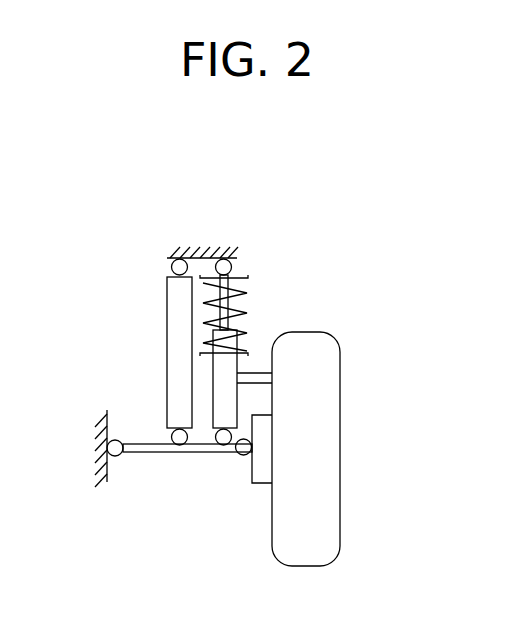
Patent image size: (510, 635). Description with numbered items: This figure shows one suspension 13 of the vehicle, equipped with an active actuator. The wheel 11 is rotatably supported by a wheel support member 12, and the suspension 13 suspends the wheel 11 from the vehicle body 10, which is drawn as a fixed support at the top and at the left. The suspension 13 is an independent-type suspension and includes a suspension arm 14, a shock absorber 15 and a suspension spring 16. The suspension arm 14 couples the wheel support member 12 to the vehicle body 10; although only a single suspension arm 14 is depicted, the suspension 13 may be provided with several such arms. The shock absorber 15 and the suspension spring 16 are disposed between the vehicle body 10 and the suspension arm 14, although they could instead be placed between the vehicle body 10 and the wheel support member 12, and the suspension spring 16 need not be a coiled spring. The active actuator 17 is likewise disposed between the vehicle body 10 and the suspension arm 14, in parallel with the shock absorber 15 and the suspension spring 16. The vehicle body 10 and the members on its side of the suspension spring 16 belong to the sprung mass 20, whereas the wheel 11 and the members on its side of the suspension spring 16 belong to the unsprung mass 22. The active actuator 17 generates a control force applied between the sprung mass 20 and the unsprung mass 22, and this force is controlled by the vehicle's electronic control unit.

The vehicle body 10 is at (205, 252).
The wheel 11 is at (330, 498).
The wheel support member 12 is at (262, 480).
The suspension 13 is at (248, 330).
The suspension arm 14 is at (162, 453).
The shock absorber 15 is at (237, 392).
The suspension spring 16 is at (212, 300).
The active actuator 17 is at (167, 347).
The sprung mass 20 is at (277, 228).
The unsprung mass 22 is at (390, 435).